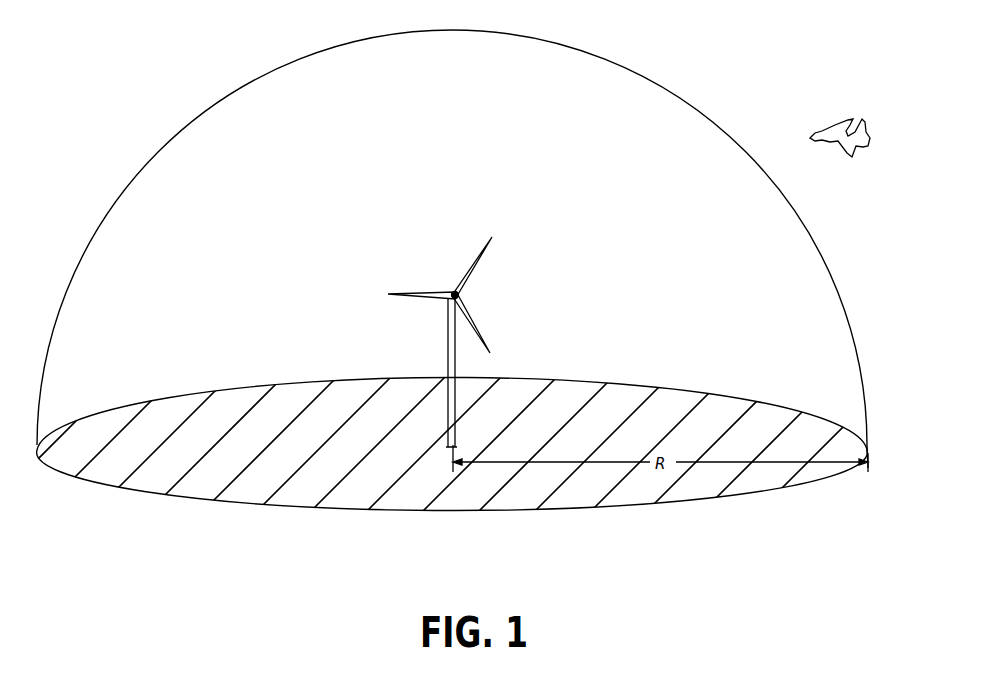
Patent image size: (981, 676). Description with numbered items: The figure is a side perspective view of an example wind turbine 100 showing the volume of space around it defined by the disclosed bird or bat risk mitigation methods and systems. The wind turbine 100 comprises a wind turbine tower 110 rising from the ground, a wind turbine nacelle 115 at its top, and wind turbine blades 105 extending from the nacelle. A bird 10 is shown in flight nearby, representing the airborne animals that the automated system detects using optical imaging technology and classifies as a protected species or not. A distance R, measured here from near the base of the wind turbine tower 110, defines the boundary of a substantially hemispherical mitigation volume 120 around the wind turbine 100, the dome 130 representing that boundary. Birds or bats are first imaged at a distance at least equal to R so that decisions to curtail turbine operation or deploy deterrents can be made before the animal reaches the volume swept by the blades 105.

The bird 10 is at (868, 122).
The wind turbine 100 is at (457, 340).
The wind turbine blades 105 is at (472, 268).
The wind turbine tower 110 is at (448, 353).
The wind turbine nacelle 115 is at (452, 288).
The mitigation volume 120 is at (256, 386).
The hemispherical detection zone 130 is at (160, 150).